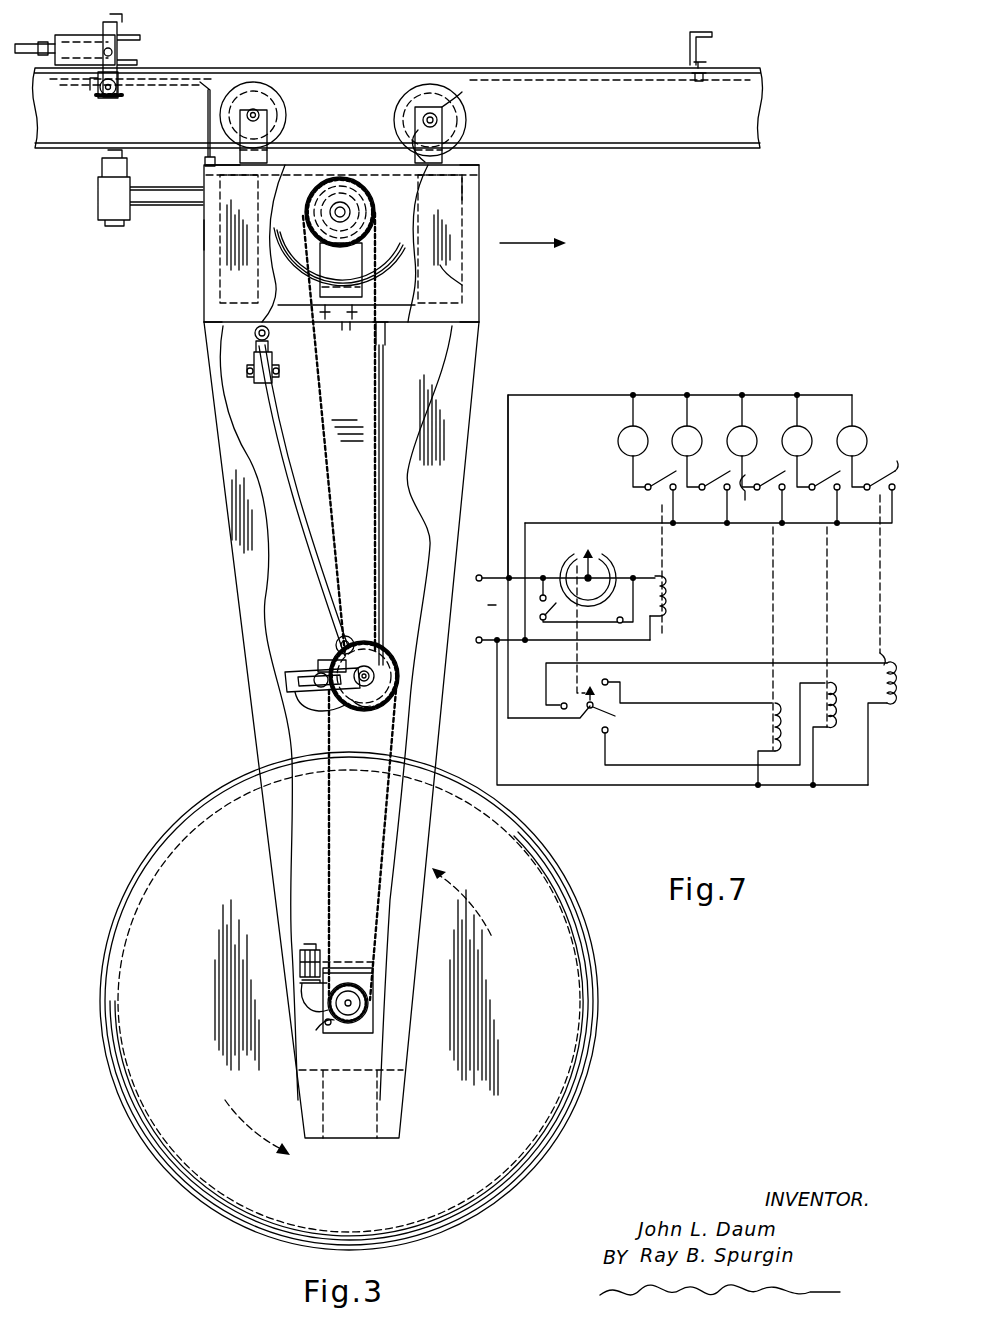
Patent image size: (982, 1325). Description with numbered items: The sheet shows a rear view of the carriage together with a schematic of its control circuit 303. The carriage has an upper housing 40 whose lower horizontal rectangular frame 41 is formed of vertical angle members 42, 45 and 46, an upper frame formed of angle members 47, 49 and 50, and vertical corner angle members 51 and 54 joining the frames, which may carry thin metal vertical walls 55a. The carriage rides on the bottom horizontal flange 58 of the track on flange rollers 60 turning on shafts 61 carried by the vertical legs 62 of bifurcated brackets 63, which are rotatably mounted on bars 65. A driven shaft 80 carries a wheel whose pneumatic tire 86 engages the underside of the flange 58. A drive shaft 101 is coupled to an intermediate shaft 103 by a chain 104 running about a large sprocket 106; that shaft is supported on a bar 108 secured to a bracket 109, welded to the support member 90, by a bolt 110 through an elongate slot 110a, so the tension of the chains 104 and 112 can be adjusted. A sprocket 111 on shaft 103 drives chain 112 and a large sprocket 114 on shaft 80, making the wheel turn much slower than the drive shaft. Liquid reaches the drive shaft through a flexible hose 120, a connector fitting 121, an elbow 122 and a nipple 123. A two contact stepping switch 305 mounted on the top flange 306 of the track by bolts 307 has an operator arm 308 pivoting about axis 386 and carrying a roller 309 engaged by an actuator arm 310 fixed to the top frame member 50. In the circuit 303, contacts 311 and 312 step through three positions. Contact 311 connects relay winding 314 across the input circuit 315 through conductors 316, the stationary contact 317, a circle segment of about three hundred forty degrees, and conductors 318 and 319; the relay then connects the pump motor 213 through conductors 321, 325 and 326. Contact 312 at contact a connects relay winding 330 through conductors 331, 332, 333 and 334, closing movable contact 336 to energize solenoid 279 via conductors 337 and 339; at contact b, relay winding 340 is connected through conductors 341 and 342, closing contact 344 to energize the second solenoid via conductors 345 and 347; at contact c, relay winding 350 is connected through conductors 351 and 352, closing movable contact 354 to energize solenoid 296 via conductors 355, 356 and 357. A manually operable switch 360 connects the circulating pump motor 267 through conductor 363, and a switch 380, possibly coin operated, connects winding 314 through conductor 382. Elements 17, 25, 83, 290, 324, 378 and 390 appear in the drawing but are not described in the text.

In FIG. 3, the frame 17 is at (292, 621).
In FIG. 3, the bracket 25 is at (713, 56).
In FIG. 3, the upper housing 40 is at (204, 288).
In FIG. 3, the lower horizontal rectangular frame 41 is at (397, 257).
In FIG. 3, the vertical angle member 42 is at (386, 328).
In FIG. 3, the vertical angle member 45 is at (465, 306).
In FIG. 3, the vertical angle member 46 is at (207, 309).
In FIG. 3, the angle member 47 is at (432, 172).
In FIG. 3, the angle member 49 is at (483, 167).
In FIG. 3, the top frame member 50 is at (205, 170).
In FIG. 3, the vertical corner angle member 51 is at (210, 233).
In FIG. 3, the vertical corner angle member 54 is at (465, 188).
In FIG. 3, the vertical walls 55a is at (450, 292).
In FIG. 3, the bottom horizontal flange 58 is at (688, 150).
In FIG. 3, the flange rollers 60 is at (270, 128).
In FIG. 3, the shafts 61 is at (423, 121).
In FIG. 3, the vertical legs 62 is at (445, 134).
In FIG. 3, the bifurcated brackets 63 is at (438, 114).
In FIG. 3, the bars 65 is at (239, 238).
In FIG. 3, the driven shaft 80 is at (343, 213).
In FIG. 3, the guard 83 is at (400, 265).
In FIG. 3, the pneumatic tire 86 is at (272, 333).
In FIG. 3, the support member 90 is at (360, 502).
In FIG. 3, the drive shaft 101 is at (350, 1008).
In FIG. 3, the intermediate shaft 103 is at (385, 668).
In FIG. 3, the chain 104 is at (398, 736).
In FIG. 3, the large sprocket 106 is at (358, 708).
In FIG. 3, the bar 108 is at (302, 712).
In FIG. 3, the bracket 109 is at (324, 668).
In FIG. 3, the bolt 110 is at (310, 676).
In FIG. 3, the elongate slot 110a is at (330, 684).
In FIG. 3, the sprocket 111 is at (380, 660).
In FIG. 3, the chain 112 is at (392, 522).
In FIG. 3, the large sprocket 114 is at (354, 222).
In FIG. 3, the flexible hose 120 is at (270, 428).
In FIG. 3, the connector fitting 121 is at (300, 966).
In FIG. 3, the elbow 122 is at (300, 1004).
In FIG. 3, the nipple 123 is at (330, 1022).
In FIG. 3, the two contact stepping switch 305 is at (150, 33).
In FIG. 3, the top flange 306 is at (168, 70).
In FIG. 3, the bolts 307 is at (42, 40).
In FIG. 3, the operator arm 308 is at (100, 86).
In FIG. 3, the roller 309 is at (105, 96).
In FIG. 3, the actuator arm 310 is at (207, 104).
In FIG. 3, the axis 386 is at (115, 56).
In FIG. 7, the control circuit 303 is at (583, 390).
In FIG. 7, the contact 311 is at (585, 548).
In FIG. 7, the contact 312 is at (610, 712).
In FIG. 7, the relay winding 314 is at (672, 604).
In FIG. 7, the input circuit 315 is at (500, 610).
In FIG. 7, the conductors 316 is at (495, 574).
In FIG. 7, the stationary contact 317 is at (566, 556).
In FIG. 7, the conductor 318 is at (644, 560).
In FIG. 7, the conductor 319 is at (648, 645).
In FIG. 7, the conductor 321 is at (502, 408).
In FIG. 7, the lead 324 is at (631, 404).
In FIG. 7, the conductor 325 is at (628, 466).
In FIG. 7, the conductor 326 is at (672, 512).
In FIG. 7, the relay winding 330 is at (770, 722).
In FIG. 7, the conductor 331 is at (540, 726).
In FIG. 7, the conductor 332 is at (715, 688).
In FIG. 7, the conductor 333 is at (747, 765).
In FIG. 7, the conductor 334 is at (648, 790).
In FIG. 7, the movable contact 336 is at (785, 477).
In FIG. 7, the conductor 337 is at (741, 403).
In FIG. 7, the conductor 339 is at (781, 518).
In FIG. 7, the relay winding 340 is at (878, 676).
In FIG. 7, the conductor 341 is at (686, 404).
In FIG. 7, the conductor 342 is at (814, 750).
In FIG. 7, the contact 344 is at (840, 477).
In FIG. 7, the conductor 345 is at (796, 403).
In FIG. 7, the conductor 347 is at (836, 518).
In FIG. 7, the relay winding 350 is at (872, 642).
In FIG. 7, the conductor 351 is at (706, 650).
In FIG. 7, the conductor 352 is at (870, 767).
In FIG. 7, the movable contact 354 is at (896, 454).
In FIG. 7, the conductor 355 is at (854, 418).
In FIG. 7, the conductor 356 is at (862, 480).
In FIG. 7, the conductor 357 is at (891, 518).
In FIG. 7, the manually operable switch 360 is at (729, 474).
In FIG. 7, the conductor 363 is at (726, 518).
In FIG. 7, the link 378 is at (748, 491).
In FIG. 7, the switch 380 is at (548, 624).
In FIG. 7, the conductor 382 is at (626, 622).
In FIG. 7, the switch 390 is at (680, 479).
In FIG. 7, the electric motor 213 is at (617, 443).
In FIG. 7, the electric motor 267 is at (670, 440).
In FIG. 7, the solenoid 279 is at (724, 441).
In FIG. 7, the lamp 290 is at (780, 438).
In FIG. 7, the solenoid 296 is at (839, 438).
In FIG. 7, the stationary contact a is at (611, 669).
In FIG. 7, the stationary contact b is at (597, 733).
In FIG. 7, the stationary contact c is at (559, 698).